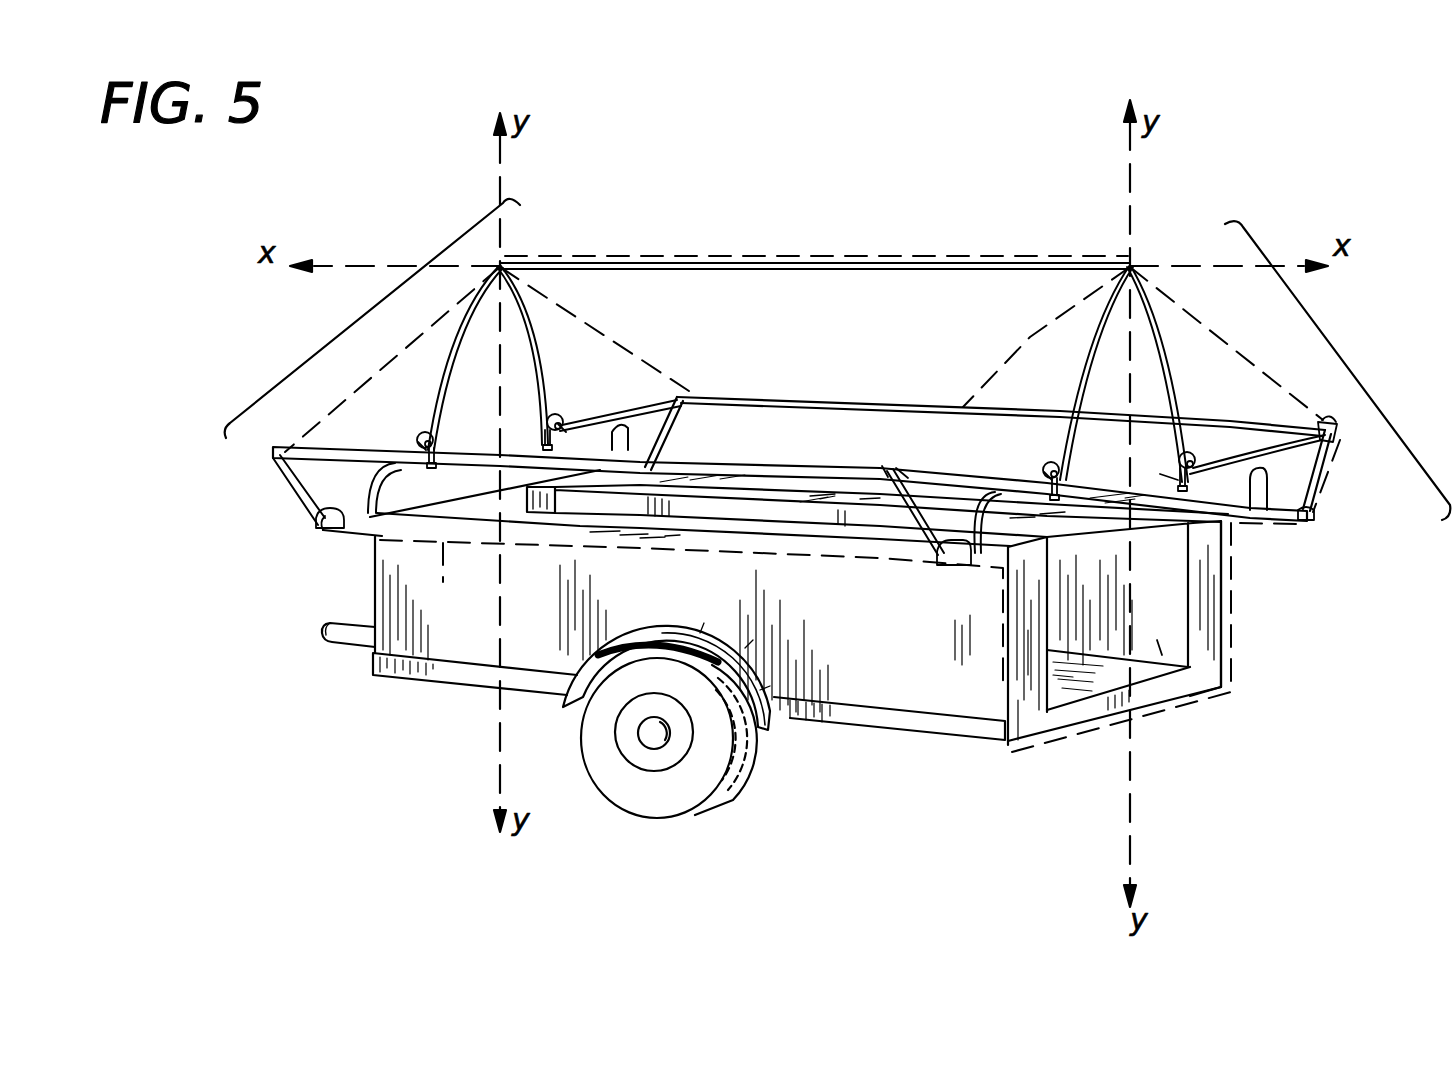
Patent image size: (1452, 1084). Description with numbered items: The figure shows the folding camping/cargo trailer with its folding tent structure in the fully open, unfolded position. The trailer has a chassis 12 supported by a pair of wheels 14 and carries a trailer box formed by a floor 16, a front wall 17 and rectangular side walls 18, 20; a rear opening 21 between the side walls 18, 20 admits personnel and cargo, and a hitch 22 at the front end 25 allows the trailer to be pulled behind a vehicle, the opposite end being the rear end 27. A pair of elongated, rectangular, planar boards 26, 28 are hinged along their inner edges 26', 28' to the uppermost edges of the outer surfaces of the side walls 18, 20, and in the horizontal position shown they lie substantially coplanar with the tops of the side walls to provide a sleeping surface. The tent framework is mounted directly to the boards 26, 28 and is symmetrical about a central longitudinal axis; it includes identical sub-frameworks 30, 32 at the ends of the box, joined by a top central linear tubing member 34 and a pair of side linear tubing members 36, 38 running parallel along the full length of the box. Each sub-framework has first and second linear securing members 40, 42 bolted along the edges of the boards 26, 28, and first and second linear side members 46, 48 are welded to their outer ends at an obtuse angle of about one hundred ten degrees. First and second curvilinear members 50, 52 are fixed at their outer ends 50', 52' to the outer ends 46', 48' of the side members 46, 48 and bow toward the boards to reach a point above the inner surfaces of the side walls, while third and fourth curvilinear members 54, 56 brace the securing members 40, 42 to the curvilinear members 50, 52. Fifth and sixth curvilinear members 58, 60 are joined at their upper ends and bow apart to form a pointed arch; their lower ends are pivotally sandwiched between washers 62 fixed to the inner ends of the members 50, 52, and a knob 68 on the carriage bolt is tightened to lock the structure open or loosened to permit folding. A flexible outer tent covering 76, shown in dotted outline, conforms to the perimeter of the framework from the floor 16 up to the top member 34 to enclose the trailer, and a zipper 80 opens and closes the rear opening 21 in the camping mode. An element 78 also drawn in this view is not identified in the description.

The chassis 12 is at (867, 718).
The wheels 14 is at (643, 790).
The floor 16 is at (1107, 707).
The front wall 17 is at (478, 508).
The side wall 18 is at (690, 527).
The side wall 20 is at (1210, 592).
The rear opening 21 is at (1157, 640).
The hitch 22 is at (329, 632).
The front end 25 is at (257, 525).
The planar board 26 is at (665, 629).
The inner edge 26' is at (775, 634).
The rear end 27 is at (1313, 641).
The planar board 28 is at (1134, 600).
The inner edge 28' is at (1202, 594).
The sub-framework 30 is at (361, 322).
The sub-framework 32 is at (1340, 348).
The top central linear tubing member 34 is at (797, 267).
The side linear tubing member 36 is at (867, 405).
The side linear tubing member 38 is at (703, 467).
The first linear securing member 40 is at (303, 523).
The second linear securing member 42 is at (1312, 511).
The first linear side member 46 is at (608, 531).
The outer end of side member 46' is at (861, 450).
The second linear side member 48 is at (1016, 454).
The outer end of side member 48' is at (1384, 415).
The first curvilinear member 50 is at (705, 436).
The outer end of curvilinear member 50' is at (905, 445).
The second curvilinear member 52 is at (942, 419).
The outer end of curvilinear member 52' is at (1309, 385).
The third curvilinear member 54 is at (370, 486).
The fourth curvilinear member 56 is at (620, 426).
The fifth curvilinear member 58 is at (453, 363).
The sixth curvilinear member 60 is at (540, 343).
The washer 62 is at (433, 430).
The knob 68 is at (1170, 471).
The flexible outer tent covering 76 is at (702, 252).
The inner wall face 78 is at (1043, 623).
The zipper 80 is at (1135, 650).